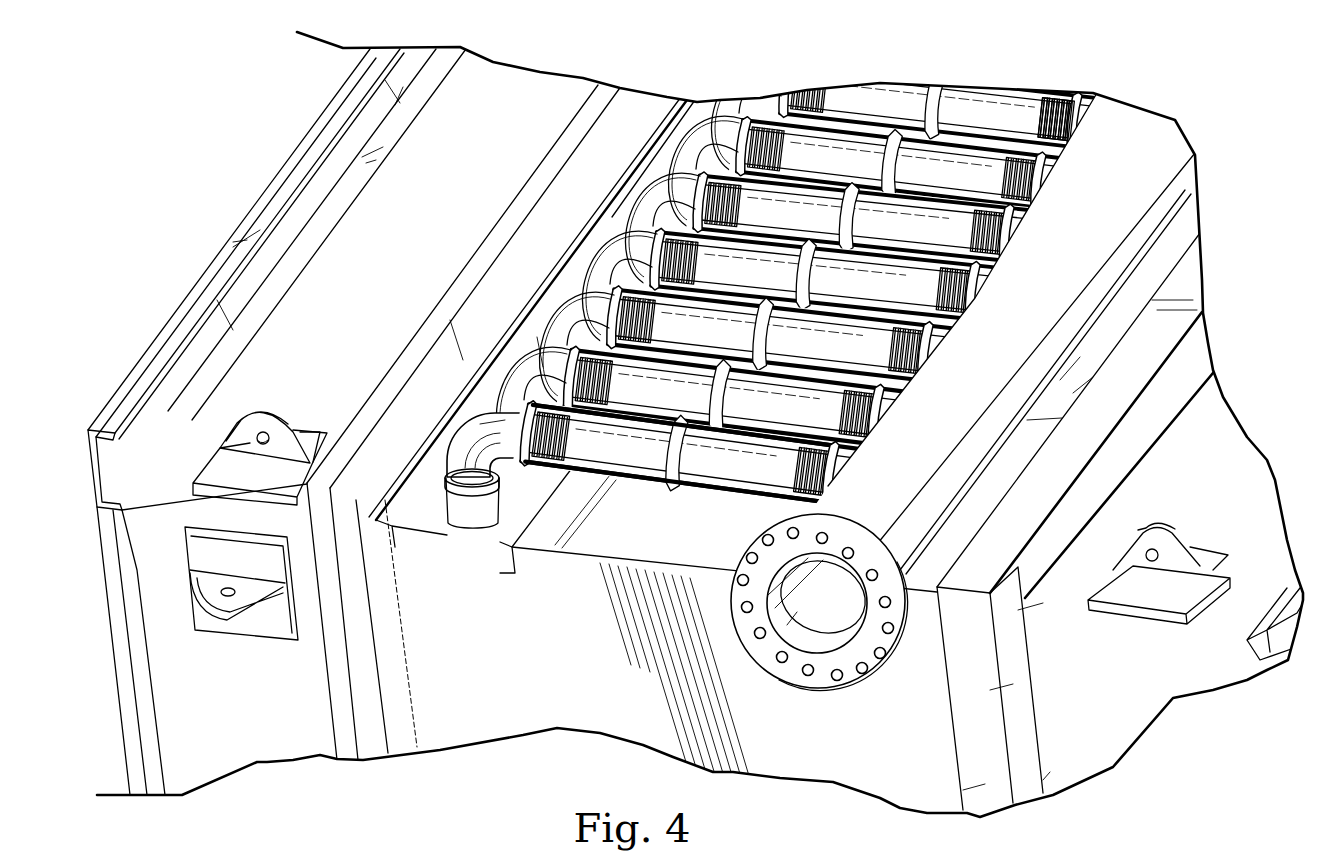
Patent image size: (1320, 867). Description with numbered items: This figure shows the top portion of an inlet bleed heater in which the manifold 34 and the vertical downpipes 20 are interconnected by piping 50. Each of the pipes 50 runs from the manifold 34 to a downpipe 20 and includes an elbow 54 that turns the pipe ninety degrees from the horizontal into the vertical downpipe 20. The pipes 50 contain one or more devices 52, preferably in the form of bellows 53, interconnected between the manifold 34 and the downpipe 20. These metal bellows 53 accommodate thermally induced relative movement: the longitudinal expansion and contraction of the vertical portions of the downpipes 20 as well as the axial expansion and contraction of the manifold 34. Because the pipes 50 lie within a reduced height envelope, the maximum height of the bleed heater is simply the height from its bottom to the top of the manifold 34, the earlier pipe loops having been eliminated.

The downpipe 20 is at (460, 495).
The manifold 34 is at (1132, 120).
The piping 50 is at (759, 302).
The device 52 is at (541, 458).
The bellows 53 is at (1037, 107).
The elbow 54 is at (468, 442).